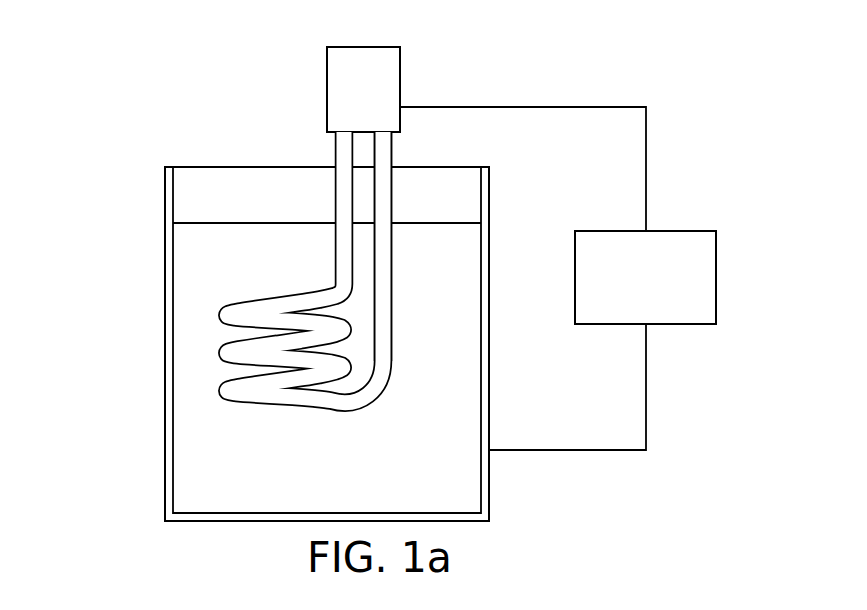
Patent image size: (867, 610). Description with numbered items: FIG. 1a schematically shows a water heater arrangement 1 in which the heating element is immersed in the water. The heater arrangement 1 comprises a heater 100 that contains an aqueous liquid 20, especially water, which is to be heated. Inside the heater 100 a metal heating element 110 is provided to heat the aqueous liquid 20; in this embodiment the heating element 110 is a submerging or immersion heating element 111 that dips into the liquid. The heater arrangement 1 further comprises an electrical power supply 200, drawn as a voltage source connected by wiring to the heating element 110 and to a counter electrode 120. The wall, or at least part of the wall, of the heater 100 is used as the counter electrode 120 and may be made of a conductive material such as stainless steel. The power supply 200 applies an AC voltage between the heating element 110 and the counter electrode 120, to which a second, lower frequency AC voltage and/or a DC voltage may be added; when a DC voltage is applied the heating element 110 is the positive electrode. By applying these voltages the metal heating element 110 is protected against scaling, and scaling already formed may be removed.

The heater arrangement 1 is at (399, 284).
The aqueous liquid 20 is at (198, 350).
The heater 100 is at (145, 466).
The heating element 110 is at (380, 147).
The submerging/immersion heating element 111 is at (343, 153).
The counter electrode 120 is at (490, 383).
The electrical power supply 200 is at (694, 208).